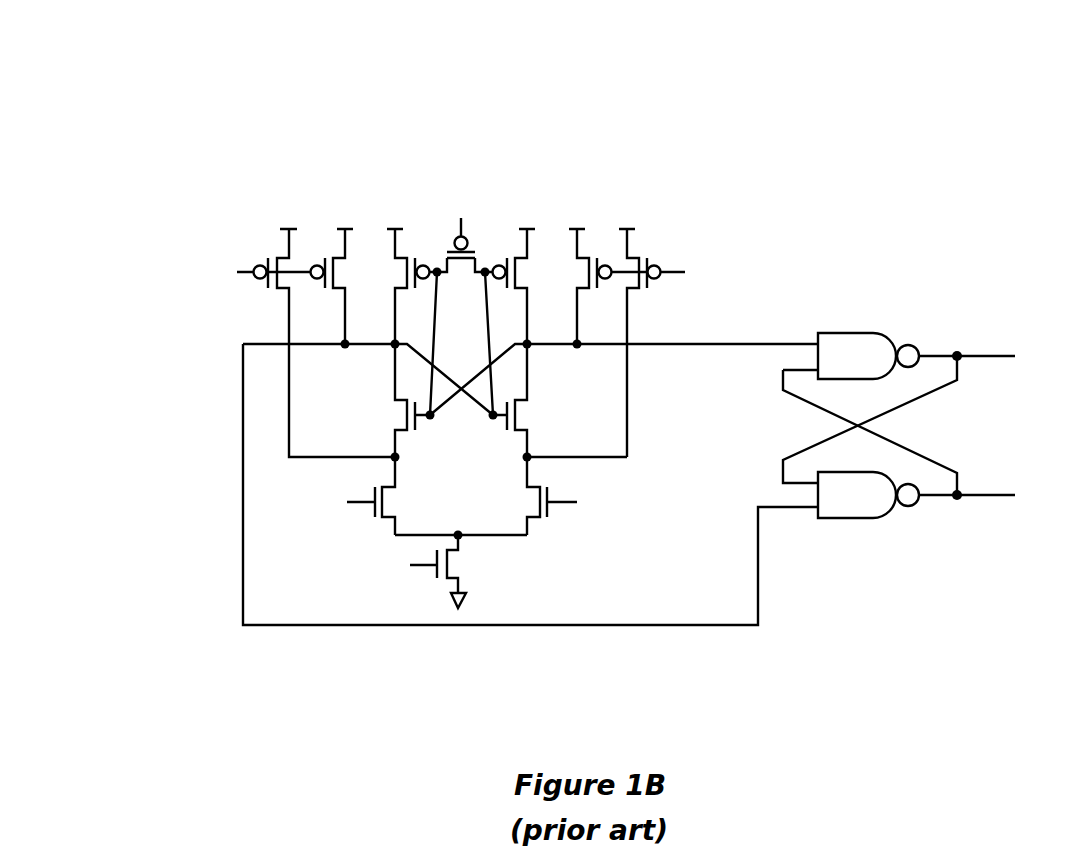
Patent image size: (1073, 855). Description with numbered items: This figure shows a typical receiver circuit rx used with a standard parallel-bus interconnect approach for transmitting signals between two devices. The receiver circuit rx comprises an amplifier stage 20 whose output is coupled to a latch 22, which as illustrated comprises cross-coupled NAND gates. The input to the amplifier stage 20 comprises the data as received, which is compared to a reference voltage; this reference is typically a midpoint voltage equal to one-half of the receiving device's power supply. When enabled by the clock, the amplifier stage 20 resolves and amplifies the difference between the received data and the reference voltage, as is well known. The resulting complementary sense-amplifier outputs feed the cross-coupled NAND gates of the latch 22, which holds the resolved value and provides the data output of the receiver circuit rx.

The receiver rx is at (258, 73).
The amplifier stage 20 is at (552, 123).
The latch 22 is at (893, 226).